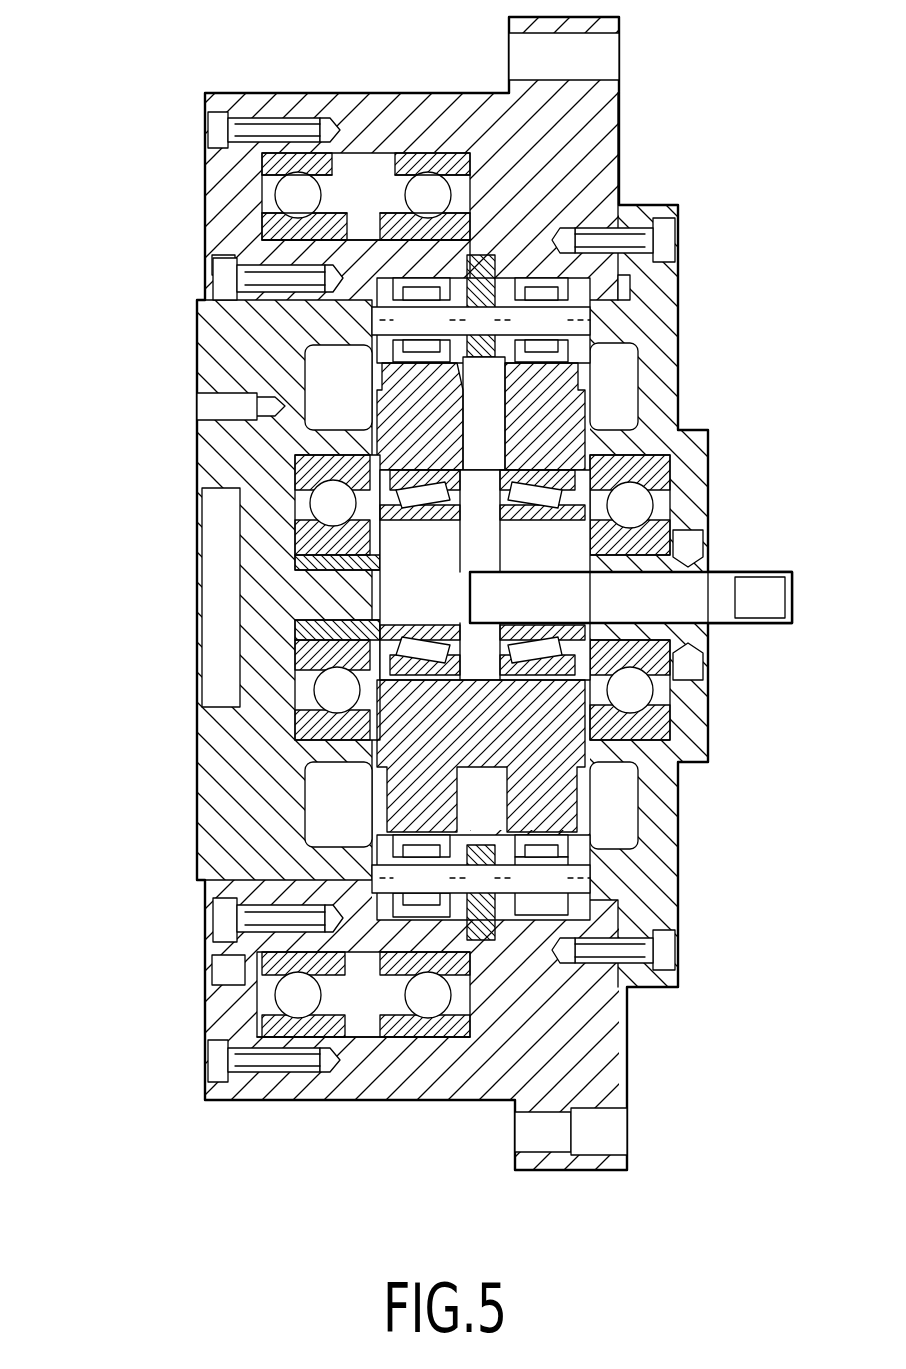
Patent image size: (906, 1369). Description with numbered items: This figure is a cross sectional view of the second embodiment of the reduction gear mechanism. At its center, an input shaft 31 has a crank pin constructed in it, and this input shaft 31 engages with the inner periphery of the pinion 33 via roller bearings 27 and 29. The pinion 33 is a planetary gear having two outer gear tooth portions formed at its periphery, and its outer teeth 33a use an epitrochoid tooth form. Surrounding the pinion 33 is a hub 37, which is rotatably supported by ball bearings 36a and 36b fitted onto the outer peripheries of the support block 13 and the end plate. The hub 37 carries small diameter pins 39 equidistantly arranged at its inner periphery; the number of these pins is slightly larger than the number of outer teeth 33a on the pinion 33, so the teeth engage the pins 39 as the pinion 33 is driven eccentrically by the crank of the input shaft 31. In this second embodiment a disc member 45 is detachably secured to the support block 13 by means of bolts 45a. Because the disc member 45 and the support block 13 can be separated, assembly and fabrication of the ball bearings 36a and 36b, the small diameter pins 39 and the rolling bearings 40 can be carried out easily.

The support block 13 is at (192, 769).
The disc member 45 is at (367, 263).
The bolts 45a is at (230, 283).
The outer teeth 33a is at (403, 373).
The roller bearing 27 is at (410, 480).
The roller bearing 29 is at (543, 478).
The input shaft 31 is at (557, 598).
The pinion 33 is at (552, 808).
The rolling bearings 40 is at (543, 890).
The small diameter pins 39 is at (420, 877).
The ball bearing 36a is at (287, 1030).
The ball bearing 36b is at (432, 1028).
The hub 37 is at (460, 1100).